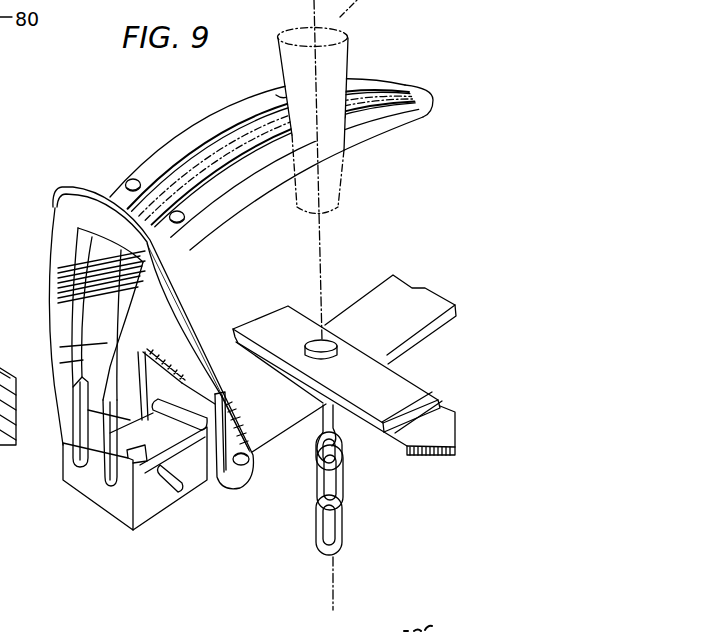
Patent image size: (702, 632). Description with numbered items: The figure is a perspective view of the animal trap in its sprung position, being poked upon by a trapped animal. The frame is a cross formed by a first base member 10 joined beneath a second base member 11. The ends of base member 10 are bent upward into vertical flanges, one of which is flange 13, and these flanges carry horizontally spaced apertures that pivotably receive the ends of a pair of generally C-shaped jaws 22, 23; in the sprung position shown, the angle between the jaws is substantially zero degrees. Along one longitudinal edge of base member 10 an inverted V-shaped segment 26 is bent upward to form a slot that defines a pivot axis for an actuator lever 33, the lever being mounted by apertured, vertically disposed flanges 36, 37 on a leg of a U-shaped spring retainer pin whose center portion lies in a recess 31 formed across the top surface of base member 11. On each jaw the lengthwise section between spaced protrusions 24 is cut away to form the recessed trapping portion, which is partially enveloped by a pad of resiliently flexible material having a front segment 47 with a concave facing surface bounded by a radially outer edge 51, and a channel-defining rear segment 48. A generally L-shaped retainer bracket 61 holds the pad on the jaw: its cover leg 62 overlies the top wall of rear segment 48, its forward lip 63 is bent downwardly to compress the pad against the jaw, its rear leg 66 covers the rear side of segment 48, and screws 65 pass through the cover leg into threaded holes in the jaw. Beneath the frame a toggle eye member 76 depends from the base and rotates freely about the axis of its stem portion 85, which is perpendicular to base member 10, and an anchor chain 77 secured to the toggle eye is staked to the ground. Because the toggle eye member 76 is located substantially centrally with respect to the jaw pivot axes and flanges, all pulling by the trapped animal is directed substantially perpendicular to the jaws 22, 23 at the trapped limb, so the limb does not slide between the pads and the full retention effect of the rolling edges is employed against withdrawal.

The first base member 10 is at (413, 293).
The second base member 11 is at (393, 380).
The flange 13 is at (132, 505).
The jaw 22 is at (60, 280).
The jaw 23 is at (95, 460).
The protrusions 24 is at (63, 310).
The inverted V-shaped segment 26 is at (208, 486).
The recess 31 is at (253, 466).
The actuator lever 33 is at (185, 300).
The flange 36 is at (233, 482).
The flange 37 is at (150, 377).
The front segment 47 is at (378, 72).
The rear segment 48 is at (15, 393).
The radially outer edge 51 is at (263, 110).
The retainer bracket 61 is at (210, 117).
The cover leg 62 is at (163, 153).
The lip 63 is at (182, 167).
The screws 65 is at (128, 181).
The rear leg 66 is at (250, 200).
The toggle eye member 76 is at (313, 462).
The anchor chain 77 is at (318, 535).
The stem portion 85 is at (345, 423).